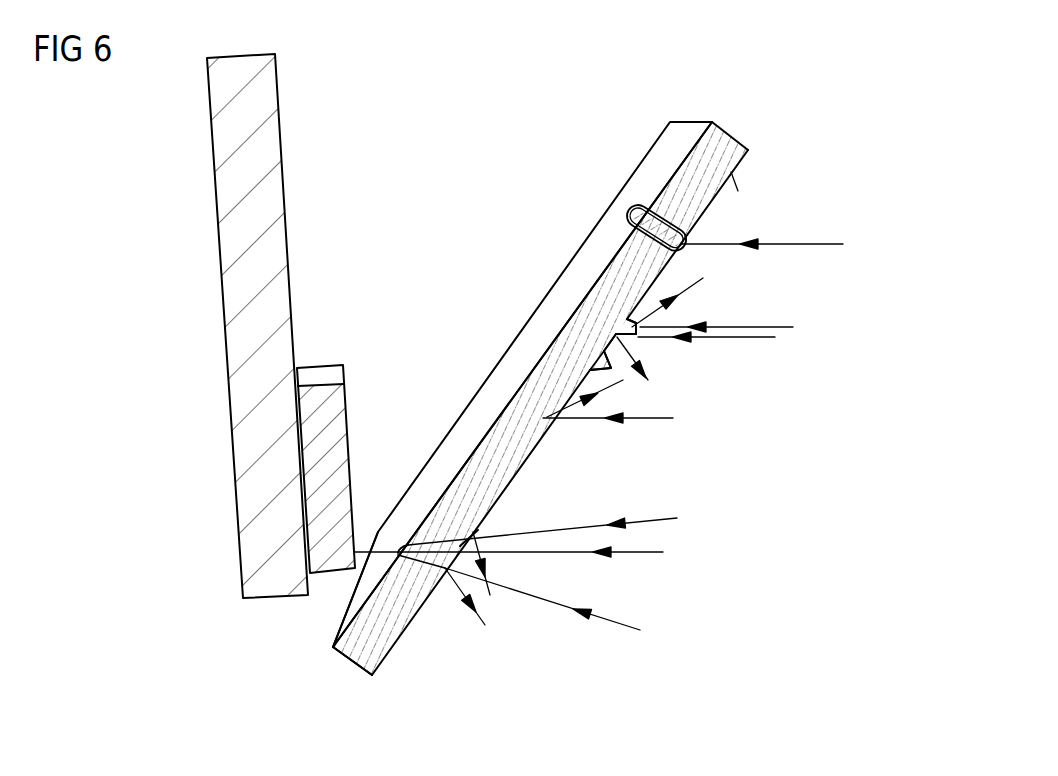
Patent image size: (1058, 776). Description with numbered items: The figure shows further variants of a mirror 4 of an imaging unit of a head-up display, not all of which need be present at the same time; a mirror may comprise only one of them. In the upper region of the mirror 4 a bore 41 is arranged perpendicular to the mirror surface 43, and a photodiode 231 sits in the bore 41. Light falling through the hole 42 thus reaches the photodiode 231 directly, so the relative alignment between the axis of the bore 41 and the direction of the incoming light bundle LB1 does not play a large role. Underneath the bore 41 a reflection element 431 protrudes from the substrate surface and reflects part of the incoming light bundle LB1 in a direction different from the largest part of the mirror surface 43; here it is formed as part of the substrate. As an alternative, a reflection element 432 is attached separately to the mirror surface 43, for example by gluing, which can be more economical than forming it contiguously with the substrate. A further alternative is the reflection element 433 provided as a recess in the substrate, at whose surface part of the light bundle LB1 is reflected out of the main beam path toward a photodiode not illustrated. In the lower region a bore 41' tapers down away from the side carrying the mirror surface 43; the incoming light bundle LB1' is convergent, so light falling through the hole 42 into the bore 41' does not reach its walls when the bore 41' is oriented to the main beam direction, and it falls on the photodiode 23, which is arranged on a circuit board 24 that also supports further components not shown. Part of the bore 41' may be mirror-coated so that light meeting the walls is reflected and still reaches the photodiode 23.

The mirror 4 is at (752, 115).
The mirror surface 43 is at (734, 178).
The bore 41 is at (717, 228).
The photodiode 231 is at (630, 205).
The hole 42 is at (673, 252).
The reflection element 431 is at (631, 328).
The reflection element 432 is at (594, 367).
The reflection element 433 is at (556, 420).
The bore 41' is at (393, 604).
The photodiode 23 is at (327, 410).
The circuit board 24 is at (237, 253).
The light bundle LB1 is at (730, 357).
The light bundle LB1' is at (565, 574).